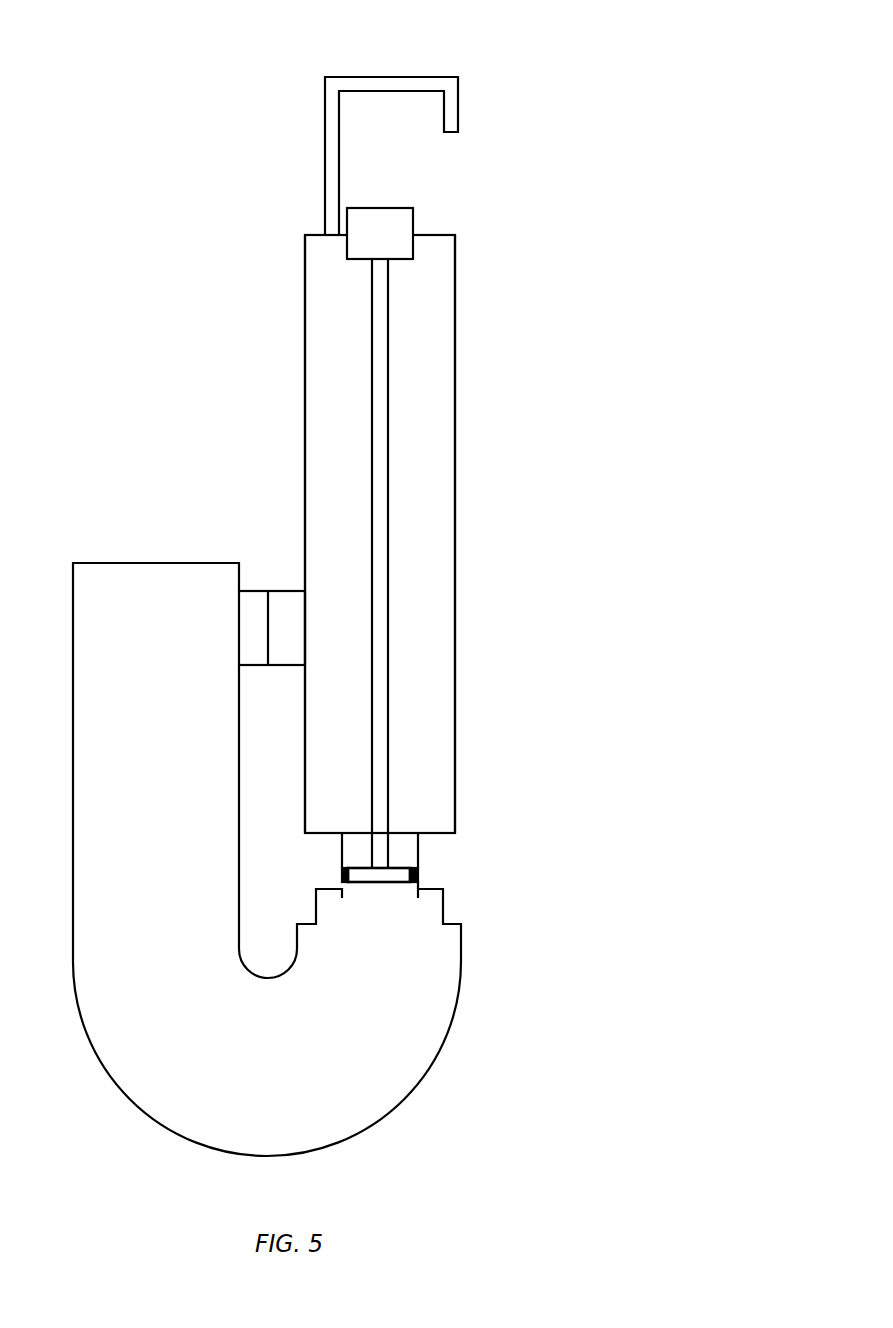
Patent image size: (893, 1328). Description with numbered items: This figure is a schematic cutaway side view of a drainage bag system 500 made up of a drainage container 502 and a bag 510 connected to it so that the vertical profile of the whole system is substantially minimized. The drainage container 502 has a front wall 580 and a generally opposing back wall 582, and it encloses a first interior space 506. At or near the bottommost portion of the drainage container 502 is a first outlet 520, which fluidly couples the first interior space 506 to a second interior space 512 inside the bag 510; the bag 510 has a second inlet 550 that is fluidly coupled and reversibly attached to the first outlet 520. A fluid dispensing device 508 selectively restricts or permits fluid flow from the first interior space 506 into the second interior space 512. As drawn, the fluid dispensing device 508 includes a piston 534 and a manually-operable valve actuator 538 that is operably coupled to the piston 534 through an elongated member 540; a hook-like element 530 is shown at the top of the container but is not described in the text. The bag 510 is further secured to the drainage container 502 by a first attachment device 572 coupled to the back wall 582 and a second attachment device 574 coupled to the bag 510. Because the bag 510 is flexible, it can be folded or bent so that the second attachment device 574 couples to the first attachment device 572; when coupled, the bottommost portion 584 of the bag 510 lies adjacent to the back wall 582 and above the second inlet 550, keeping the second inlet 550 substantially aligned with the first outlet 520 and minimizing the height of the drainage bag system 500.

The drainage bag system 500 is at (552, 60).
The drainage container 502 is at (457, 535).
The first interior space 506 is at (423, 347).
The fluid dispensing device 508 is at (372, 450).
The bag 510 is at (331, 1140).
The second interior space 512 is at (365, 1050).
The first outlet 520 is at (421, 855).
The hook 530 is at (412, 77).
The piston 534 is at (378, 885).
The manually-operable valve actuator 538 is at (396, 208).
The elongated member 540 is at (372, 286).
The second inlet 550 is at (413, 897).
The first attachment device 572 is at (292, 591).
The second attachment device 574 is at (260, 591).
The front wall 580 is at (455, 412).
The back wall 582 is at (305, 340).
The bottommost portion 584 is at (123, 563).